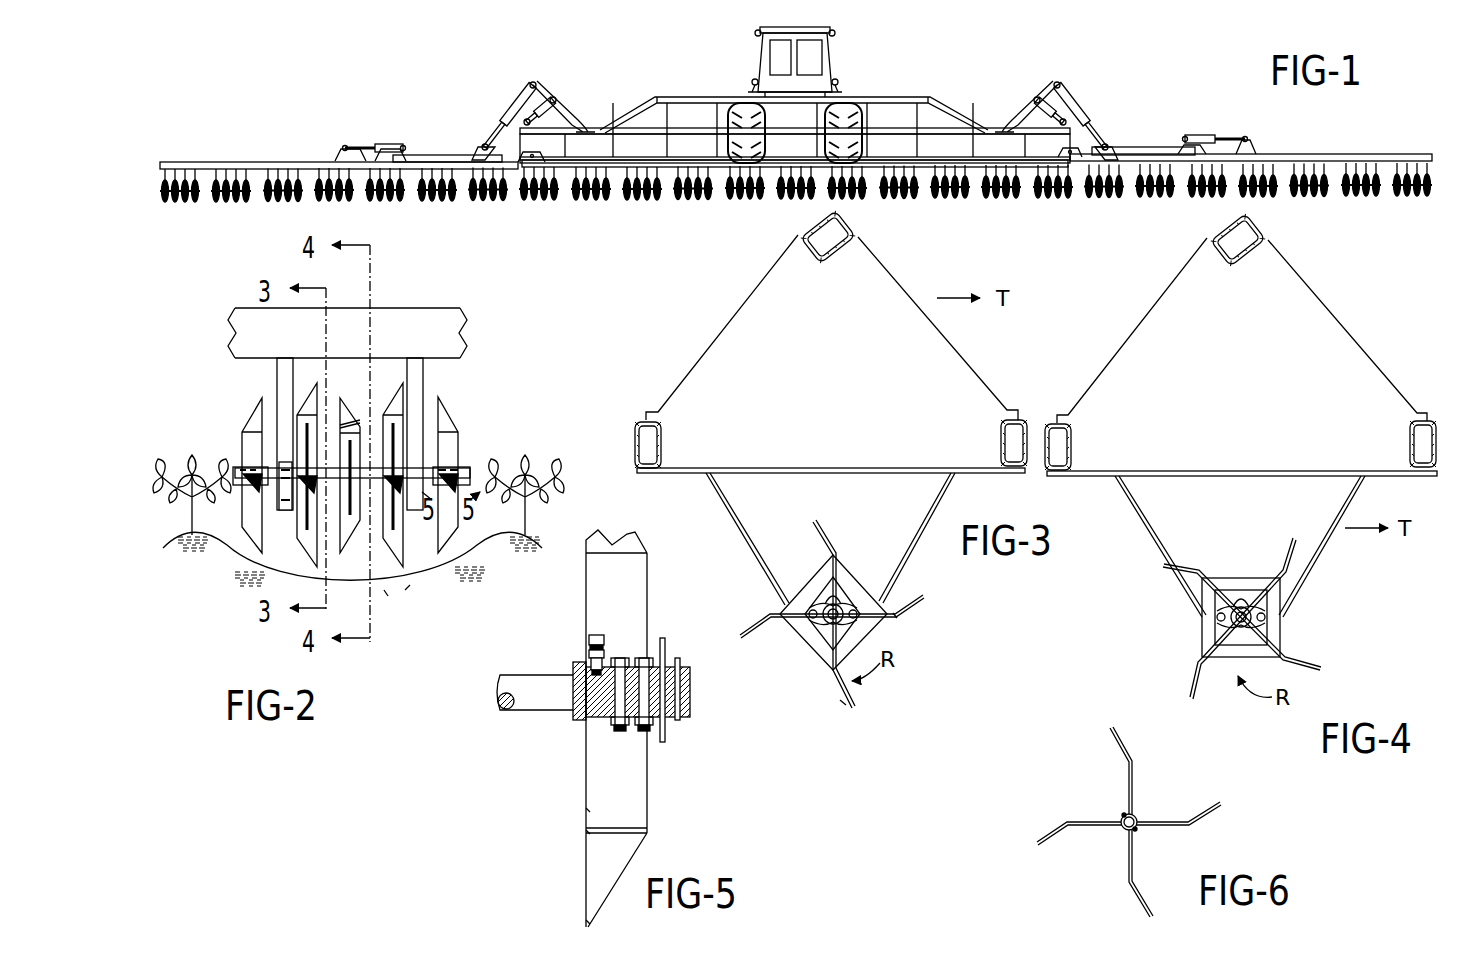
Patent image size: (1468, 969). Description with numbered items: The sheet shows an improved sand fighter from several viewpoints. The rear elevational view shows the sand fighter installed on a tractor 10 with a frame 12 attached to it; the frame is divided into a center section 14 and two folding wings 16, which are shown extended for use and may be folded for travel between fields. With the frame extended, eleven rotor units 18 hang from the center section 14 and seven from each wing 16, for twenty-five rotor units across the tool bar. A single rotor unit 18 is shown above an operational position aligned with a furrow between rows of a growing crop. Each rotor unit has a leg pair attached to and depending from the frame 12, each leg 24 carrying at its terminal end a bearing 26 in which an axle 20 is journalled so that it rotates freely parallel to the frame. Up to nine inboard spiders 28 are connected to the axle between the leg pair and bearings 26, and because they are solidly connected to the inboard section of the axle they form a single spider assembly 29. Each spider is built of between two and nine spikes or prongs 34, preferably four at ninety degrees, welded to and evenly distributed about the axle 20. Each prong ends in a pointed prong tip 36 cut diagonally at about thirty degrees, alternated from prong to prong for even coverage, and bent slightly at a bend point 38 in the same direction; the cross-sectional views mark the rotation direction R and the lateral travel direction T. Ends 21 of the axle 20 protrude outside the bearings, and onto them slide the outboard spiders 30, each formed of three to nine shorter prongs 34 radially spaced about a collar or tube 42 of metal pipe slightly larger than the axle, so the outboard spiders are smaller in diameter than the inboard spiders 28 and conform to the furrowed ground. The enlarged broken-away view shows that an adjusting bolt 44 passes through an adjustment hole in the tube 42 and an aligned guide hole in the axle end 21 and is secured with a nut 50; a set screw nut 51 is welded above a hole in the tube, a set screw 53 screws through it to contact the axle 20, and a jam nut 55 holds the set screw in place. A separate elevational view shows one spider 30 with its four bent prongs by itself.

In FIG. 1, the tractor 10 is at (838, 62).
In FIG. 1, the frame 12 is at (215, 162).
In FIG. 2, the frame 12 is at (455, 307).
In FIG. 3, the frame 12 is at (722, 300).
In FIG. 4, the frame 12 is at (1328, 287).
In FIG. 1, the center section 14 is at (935, 96).
In FIG. 1, the folding wings 16 is at (440, 125).
In FIG. 1, the rotor unit 18 is at (500, 212).
In FIG. 2, the rotor unit 18 is at (478, 372).
In FIG. 5, the axle 20 is at (505, 704).
In FIG. 5, the axle ends 21 is at (692, 700).
In FIG. 2, the leg 24 is at (283, 378).
In FIG. 3, the leg 24 is at (762, 575).
In FIG. 4, the leg 24 is at (1146, 522).
In FIG. 2, the bearing 26 is at (287, 460).
In FIG. 3, the bearing 26 is at (845, 600).
In FIG. 2, the inboard spider 28 is at (408, 588).
In FIG. 3, the inboard spider 28 is at (836, 703).
In FIG. 4, the inboard spider 28 is at (1182, 673).
In FIG. 2, the spider assembly 29 is at (386, 592).
In FIG. 5, the outboard spider 30 is at (568, 607).
In FIG. 6, the outboard spider 30 is at (1165, 820).
In FIG. 3, the prongs 34 is at (915, 600).
In FIG. 4, the prongs 34 is at (1292, 657).
In FIG. 5, the prongs 34 is at (587, 808).
In FIG. 2, the prong tip 36 is at (403, 387).
In FIG. 3, the prong tip 36 is at (813, 520).
In FIG. 4, the prong tip 36 is at (1290, 545).
In FIG. 5, the prong tip 36 is at (587, 922).
In FIG. 3, the bend point 38 is at (890, 617).
In FIG. 5, the bend point 38 is at (587, 832).
In FIG. 5, the collar or tube 42 is at (661, 660).
In FIG. 5, the adjusting bolt 44 is at (678, 716).
In FIG. 5, the nut 50 is at (615, 724).
In FIG. 5, the set screw nut 51 is at (590, 670).
In FIG. 5, the set screw 53 is at (595, 634).
In FIG. 5, the jam nut 55 is at (589, 653).